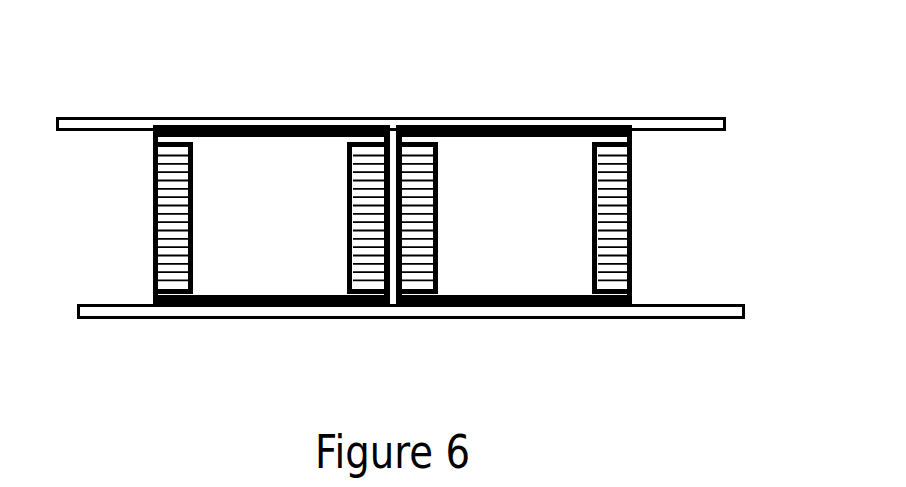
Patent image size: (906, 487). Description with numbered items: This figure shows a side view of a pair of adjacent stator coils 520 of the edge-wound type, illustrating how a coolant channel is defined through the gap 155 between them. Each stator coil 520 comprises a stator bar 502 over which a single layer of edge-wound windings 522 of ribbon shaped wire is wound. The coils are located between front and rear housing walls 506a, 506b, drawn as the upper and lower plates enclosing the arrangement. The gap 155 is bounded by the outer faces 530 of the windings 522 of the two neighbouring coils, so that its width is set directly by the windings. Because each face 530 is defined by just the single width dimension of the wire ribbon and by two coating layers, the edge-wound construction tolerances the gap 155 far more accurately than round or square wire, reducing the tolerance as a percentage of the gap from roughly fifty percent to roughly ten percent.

The front housing wall 506a is at (117, 127).
The rear housing wall 506b is at (703, 312).
The stator coil 520 is at (392, 171).
The edge-wound windings 522 is at (171, 253).
The gap 155 is at (393, 140).
The faces 530 is at (394, 166).
The stator bar 502 is at (293, 230).